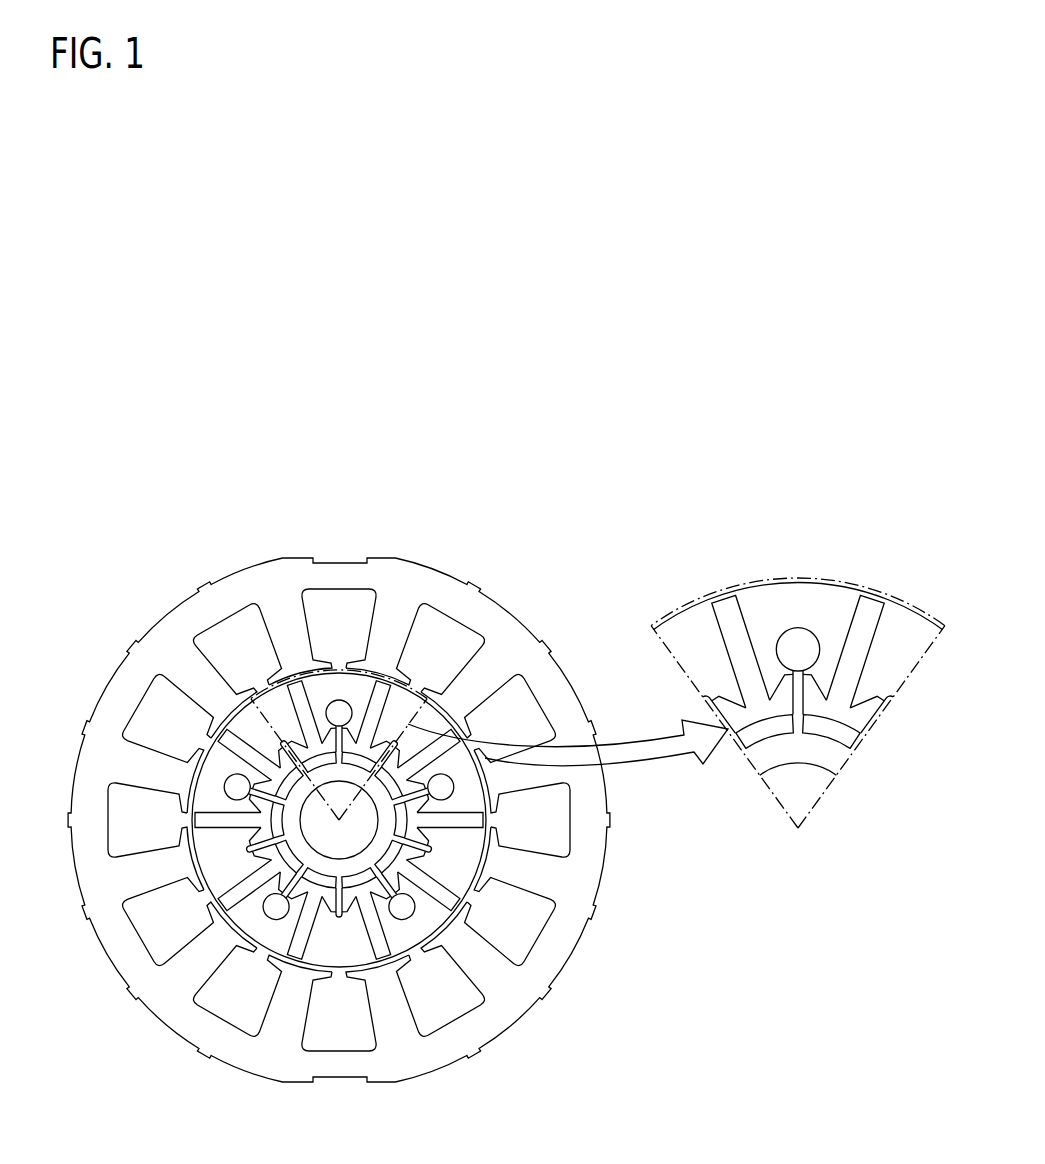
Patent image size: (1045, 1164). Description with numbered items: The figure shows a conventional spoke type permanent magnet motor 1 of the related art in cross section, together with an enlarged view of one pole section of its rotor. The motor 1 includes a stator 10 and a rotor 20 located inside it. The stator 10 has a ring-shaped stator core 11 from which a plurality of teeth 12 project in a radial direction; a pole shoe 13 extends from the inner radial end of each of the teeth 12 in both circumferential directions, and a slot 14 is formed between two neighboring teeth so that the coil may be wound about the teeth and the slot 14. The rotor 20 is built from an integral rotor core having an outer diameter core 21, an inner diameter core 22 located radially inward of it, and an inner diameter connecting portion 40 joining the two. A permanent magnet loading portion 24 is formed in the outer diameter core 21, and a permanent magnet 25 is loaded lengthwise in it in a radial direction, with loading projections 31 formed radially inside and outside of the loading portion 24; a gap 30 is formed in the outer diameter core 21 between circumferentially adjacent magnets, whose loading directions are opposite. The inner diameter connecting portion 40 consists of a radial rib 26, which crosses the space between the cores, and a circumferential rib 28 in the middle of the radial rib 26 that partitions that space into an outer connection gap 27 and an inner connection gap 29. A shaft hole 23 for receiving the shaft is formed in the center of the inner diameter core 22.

The motor 1 is at (503, 575).
The stator 10 is at (159, 624).
The stator core 11 is at (120, 689).
The teeth 12 is at (148, 768).
The pole shoe 13 is at (203, 877).
The slot 14 is at (227, 997).
The rotor 20 is at (316, 964).
The outer diameter core 21 is at (908, 617).
The inner diameter core 22 is at (775, 757).
The shaft hole 23 is at (813, 765).
The permanent magnet loading portion 24 is at (863, 676).
The permanent magnet 25 is at (858, 615).
The radial rib 26 is at (863, 707).
The outer connection gap 27 is at (868, 716).
The circumferential rib 28 is at (830, 733).
The inner connection gap 29 is at (826, 738).
The gap 30 is at (798, 627).
The loading projections 31 is at (717, 600).
The inner diameter connecting portion 40 is at (700, 711).